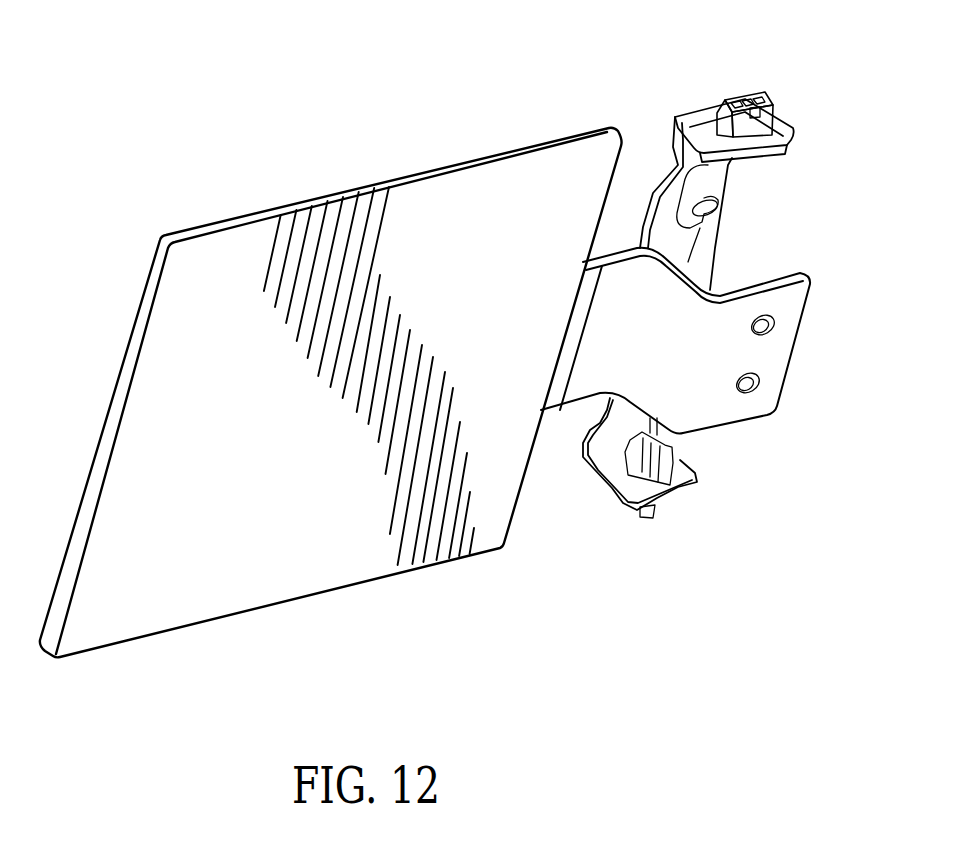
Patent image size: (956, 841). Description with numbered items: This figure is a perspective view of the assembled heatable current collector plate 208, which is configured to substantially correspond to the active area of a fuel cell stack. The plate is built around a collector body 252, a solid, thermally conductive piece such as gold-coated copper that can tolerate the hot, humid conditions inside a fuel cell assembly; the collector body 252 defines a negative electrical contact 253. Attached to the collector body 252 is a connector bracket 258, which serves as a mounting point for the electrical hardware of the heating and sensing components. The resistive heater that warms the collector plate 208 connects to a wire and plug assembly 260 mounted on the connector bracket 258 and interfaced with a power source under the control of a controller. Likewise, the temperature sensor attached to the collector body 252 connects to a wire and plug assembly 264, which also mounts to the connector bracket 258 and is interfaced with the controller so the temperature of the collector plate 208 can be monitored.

The heatable current collector plate 208 is at (454, 394).
The collector body 252 is at (407, 172).
The negative electrical contact 253 is at (781, 350).
The connector bracket 258 is at (792, 120).
The wire and plug assembly 260 is at (644, 520).
The wire and plug assembly 264 is at (760, 90).